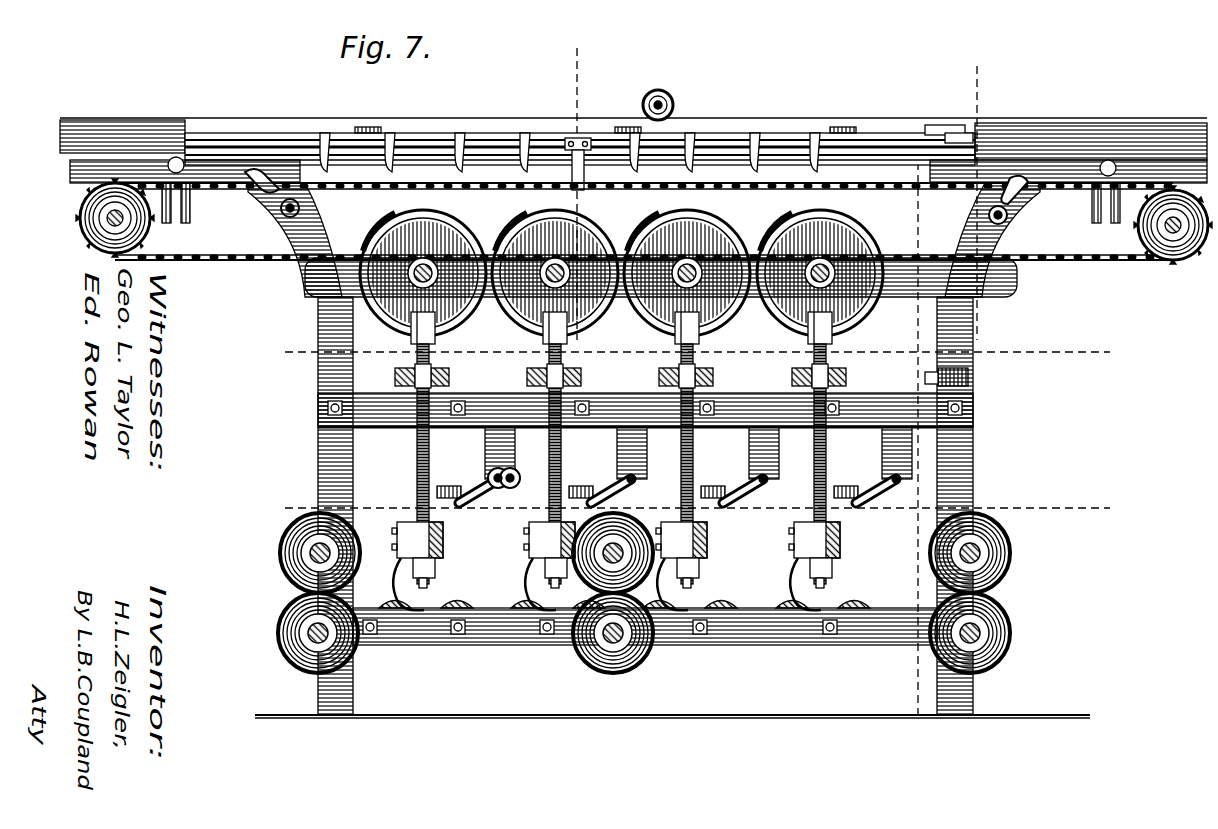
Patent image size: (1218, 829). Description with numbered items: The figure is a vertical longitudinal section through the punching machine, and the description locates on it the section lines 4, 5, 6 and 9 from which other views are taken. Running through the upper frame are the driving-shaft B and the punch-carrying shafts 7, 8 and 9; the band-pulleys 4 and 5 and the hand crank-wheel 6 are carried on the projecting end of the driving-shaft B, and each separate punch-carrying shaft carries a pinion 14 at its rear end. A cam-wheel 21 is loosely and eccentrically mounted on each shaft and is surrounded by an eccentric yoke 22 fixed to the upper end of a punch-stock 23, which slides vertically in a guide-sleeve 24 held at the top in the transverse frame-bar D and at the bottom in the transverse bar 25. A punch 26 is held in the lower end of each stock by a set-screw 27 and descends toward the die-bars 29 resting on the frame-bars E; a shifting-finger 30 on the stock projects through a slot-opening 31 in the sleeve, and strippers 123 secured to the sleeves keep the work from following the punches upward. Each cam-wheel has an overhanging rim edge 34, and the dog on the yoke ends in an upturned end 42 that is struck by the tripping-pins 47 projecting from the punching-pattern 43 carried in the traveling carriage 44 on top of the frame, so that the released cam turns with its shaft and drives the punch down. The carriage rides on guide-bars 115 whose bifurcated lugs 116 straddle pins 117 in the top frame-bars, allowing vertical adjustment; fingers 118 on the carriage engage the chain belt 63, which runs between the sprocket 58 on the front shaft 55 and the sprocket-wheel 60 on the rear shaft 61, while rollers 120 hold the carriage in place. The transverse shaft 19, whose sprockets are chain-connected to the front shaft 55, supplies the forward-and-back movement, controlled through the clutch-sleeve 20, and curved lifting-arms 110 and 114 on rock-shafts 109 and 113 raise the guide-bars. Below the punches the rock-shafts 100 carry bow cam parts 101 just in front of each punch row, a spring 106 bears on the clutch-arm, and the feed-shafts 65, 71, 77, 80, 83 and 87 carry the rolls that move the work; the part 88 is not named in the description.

The power band-pulley 4 is at (75, 165).
The power band-pulley 5 is at (1118, 322).
The hand crank-wheel 6 is at (1118, 470).
The punch-carrying shaft 7 is at (711, 246).
The punch-carrying shaft 8 is at (577, 246).
The punch-carrying shaft 9 is at (935, 62).
The pinion 14 is at (520, 42).
The transverse shaft 19 is at (1010, 290).
The clutch-sleeve 20 is at (375, 220).
The cam-wheel 21 is at (445, 240).
The eccentric yoke 22 is at (455, 300).
The punch-stock 23 is at (417, 345).
The guide-sleeve 24 is at (445, 395).
The transverse bar 25 is at (445, 540).
The punch 26 is at (432, 585).
The set-screw 27 is at (437, 562).
The die-bar 29 is at (440, 603).
The shifting-finger 30 is at (450, 486).
The vertical slot-opening 31 is at (455, 500).
The overhanging rim edge 34 is at (870, 500).
The upturned end of dog 42 is at (437, 150).
The punching-pattern 43 is at (780, 135).
The traveling carriage 44 is at (952, 125).
The punch-tripping pin 47 is at (640, 150).
The transverse shaft 55 is at (1173, 240).
The sprocket 58 is at (1090, 262).
The sprocket-wheel 60 is at (82, 213).
The shaft 61 is at (108, 225).
The chain belt 63 is at (320, 250).
The upper feed-shaft 65 is at (1010, 553).
The lower feed-shaft 71 is at (1010, 633).
The lower middle feed-shaft 77 is at (610, 640).
The upper middle feed-shaft 80 is at (640, 520).
The upper rear feed-shaft 83 is at (312, 553).
The lower feed-shaft 87 is at (310, 633).
The roller bearing 88 is at (305, 590).
The transverse rock-shaft 100 is at (905, 500).
The bow cam part 101 is at (785, 508).
The spring 106 is at (970, 377).
The transverse rock-shaft 109 is at (282, 216).
The curved lifting-arm 110 is at (258, 188).
The transverse rock-shaft 113 is at (989, 218).
The curved lifting-arm 114 is at (1000, 196).
The guide-bar 115 is at (72, 135).
The bifurcated lug 116 is at (172, 224).
The pin 117 is at (174, 157).
The finger 118 is at (605, 180).
The roller 120 is at (672, 95).
The stripper 123 is at (460, 590).
The driving-shaft B is at (830, 250).
The transverse frame-bar D is at (408, 372).
The frame-bar E is at (528, 640).